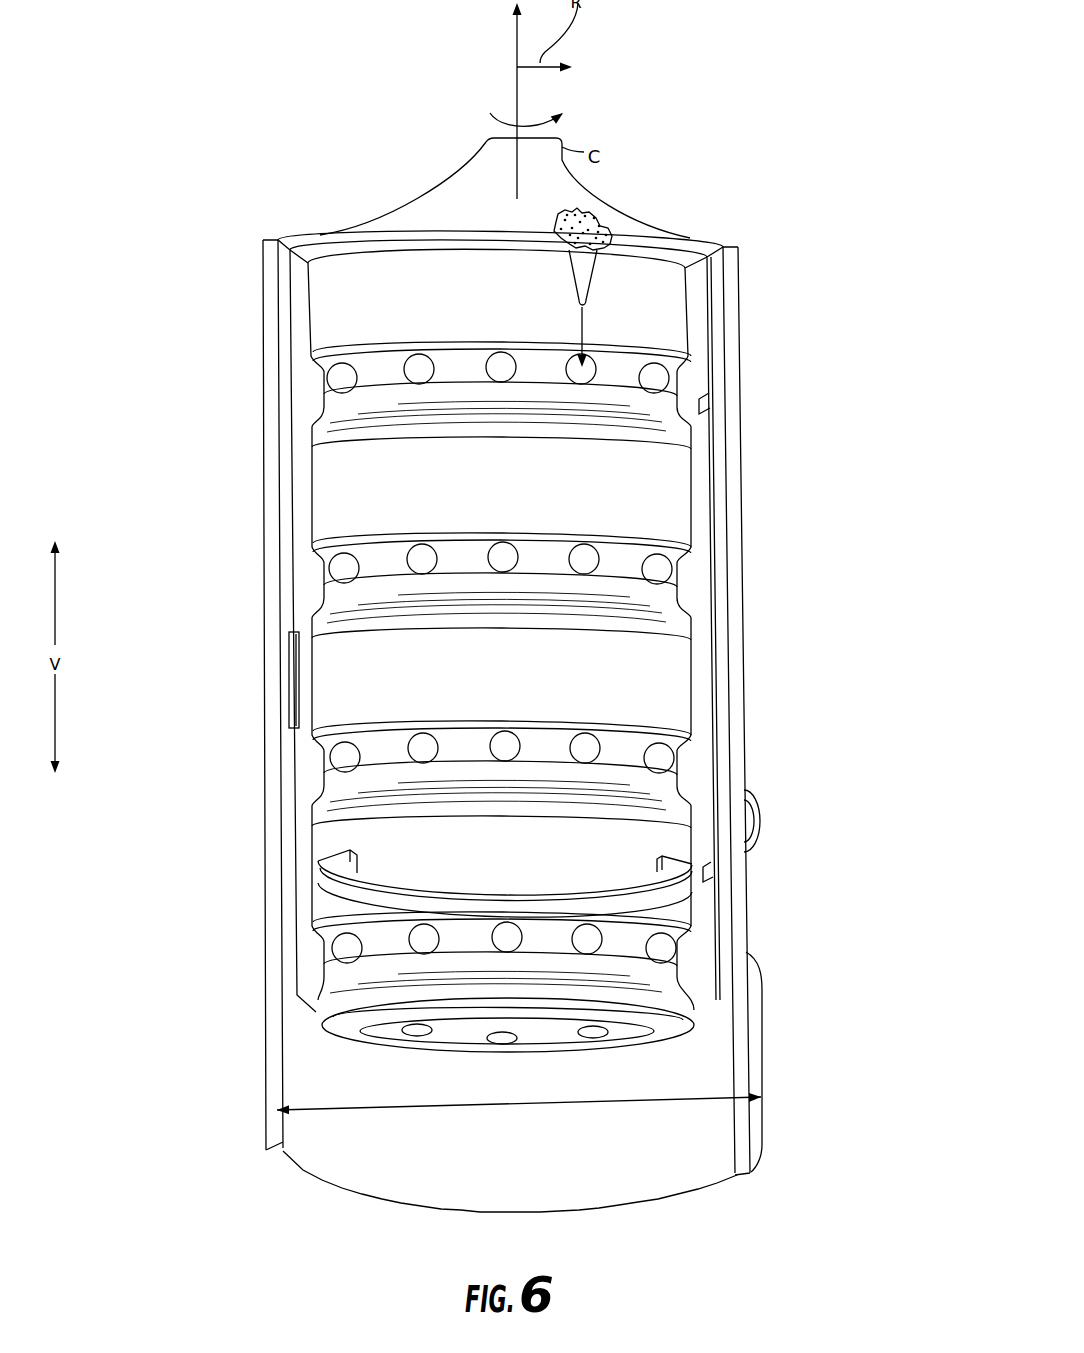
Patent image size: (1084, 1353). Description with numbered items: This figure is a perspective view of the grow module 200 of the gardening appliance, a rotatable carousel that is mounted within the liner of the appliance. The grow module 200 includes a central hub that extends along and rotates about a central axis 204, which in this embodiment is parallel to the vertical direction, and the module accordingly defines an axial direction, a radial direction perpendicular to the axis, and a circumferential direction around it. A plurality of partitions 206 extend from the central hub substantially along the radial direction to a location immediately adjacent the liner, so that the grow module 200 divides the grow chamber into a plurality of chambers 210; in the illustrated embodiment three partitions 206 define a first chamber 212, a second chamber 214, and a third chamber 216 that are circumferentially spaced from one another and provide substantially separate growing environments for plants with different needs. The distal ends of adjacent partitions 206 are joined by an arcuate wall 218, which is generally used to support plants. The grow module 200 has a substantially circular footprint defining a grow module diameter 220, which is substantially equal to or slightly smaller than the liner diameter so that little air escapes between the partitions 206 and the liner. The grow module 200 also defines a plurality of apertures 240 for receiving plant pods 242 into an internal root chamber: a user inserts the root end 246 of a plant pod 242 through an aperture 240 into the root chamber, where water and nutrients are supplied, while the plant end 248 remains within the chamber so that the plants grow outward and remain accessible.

The grow module 200 is at (878, 103).
The central axis 204 is at (515, 40).
The partitions 206 is at (330, 237).
The chambers 210 is at (651, 676).
The first chamber 212 is at (659, 188).
The second chamber 214 is at (397, 190).
The third chamber 216 is at (401, 468).
The arcuate wall 218 is at (660, 502).
The grow module diameter 220 is at (620, 1102).
The apertures 240 is at (327, 390).
The plant pod 242 is at (583, 270).
The root end 246 is at (571, 302).
The plant end 248 is at (553, 230).